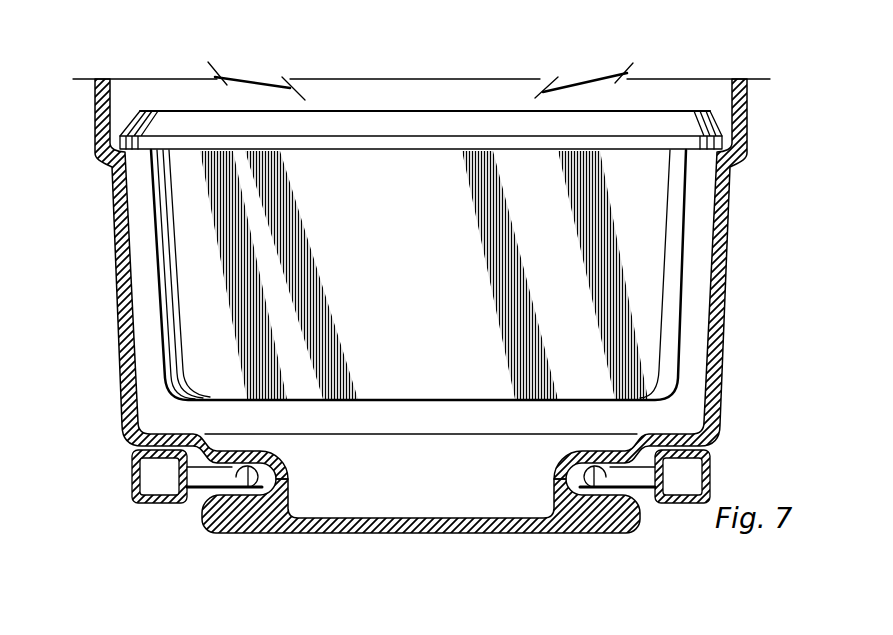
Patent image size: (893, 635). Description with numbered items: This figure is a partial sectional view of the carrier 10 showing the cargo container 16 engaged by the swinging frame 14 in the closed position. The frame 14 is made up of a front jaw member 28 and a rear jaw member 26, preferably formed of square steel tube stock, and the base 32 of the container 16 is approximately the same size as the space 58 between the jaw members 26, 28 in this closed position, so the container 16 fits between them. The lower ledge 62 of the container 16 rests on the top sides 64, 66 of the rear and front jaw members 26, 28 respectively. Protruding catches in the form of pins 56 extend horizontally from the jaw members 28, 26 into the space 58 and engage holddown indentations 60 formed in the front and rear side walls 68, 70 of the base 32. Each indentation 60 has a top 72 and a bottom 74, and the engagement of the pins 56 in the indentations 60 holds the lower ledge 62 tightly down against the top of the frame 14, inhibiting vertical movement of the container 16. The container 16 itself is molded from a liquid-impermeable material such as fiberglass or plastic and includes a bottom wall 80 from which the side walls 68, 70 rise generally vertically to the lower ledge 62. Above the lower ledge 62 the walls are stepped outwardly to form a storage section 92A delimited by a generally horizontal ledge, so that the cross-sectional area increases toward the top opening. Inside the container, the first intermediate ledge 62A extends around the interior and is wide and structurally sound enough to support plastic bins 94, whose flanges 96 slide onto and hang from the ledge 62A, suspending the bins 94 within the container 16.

The carrier 10 is at (185, 43).
The swinging frame 14 is at (114, 483).
The cargo container 16 is at (114, 240).
The rear jaw member 26 is at (724, 436).
The front jaw member 28 is at (148, 506).
The base 32 is at (128, 408).
The pins 56 is at (250, 477).
The space 58 is at (337, 543).
The holddown indentations 60 is at (308, 478).
The lower ledge 62 is at (178, 436).
The first intermediate ledge 62A is at (138, 110).
The top side of rear jaw member 64 is at (687, 434).
The top side of front jaw member 66 is at (157, 437).
The front side wall 68 is at (116, 254).
The rear side wall 70 is at (718, 313).
The top of indentation 72 is at (287, 506).
The bottom of indentation 74 is at (273, 452).
The bottom wall 80 is at (400, 519).
The storage section 92A is at (696, 301).
The plastic bins 94 is at (650, 292).
The flanges 96 is at (731, 186).